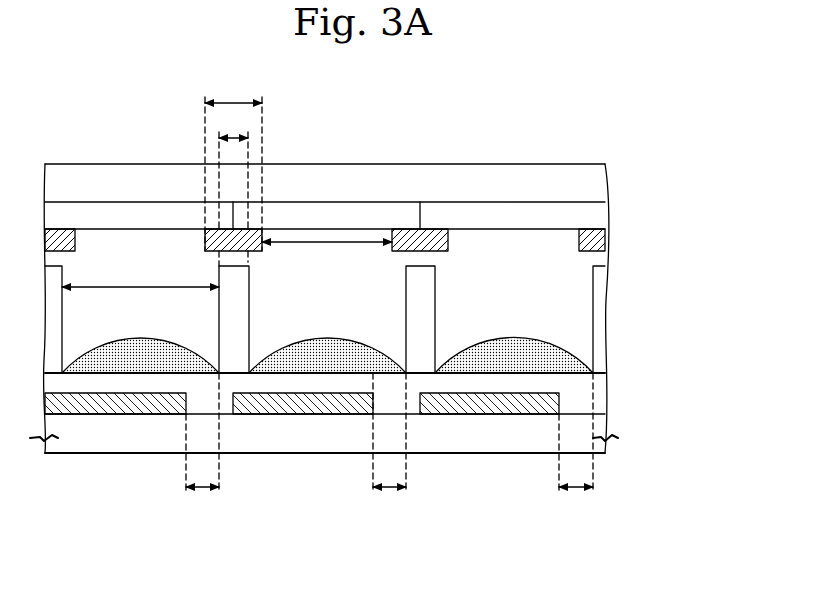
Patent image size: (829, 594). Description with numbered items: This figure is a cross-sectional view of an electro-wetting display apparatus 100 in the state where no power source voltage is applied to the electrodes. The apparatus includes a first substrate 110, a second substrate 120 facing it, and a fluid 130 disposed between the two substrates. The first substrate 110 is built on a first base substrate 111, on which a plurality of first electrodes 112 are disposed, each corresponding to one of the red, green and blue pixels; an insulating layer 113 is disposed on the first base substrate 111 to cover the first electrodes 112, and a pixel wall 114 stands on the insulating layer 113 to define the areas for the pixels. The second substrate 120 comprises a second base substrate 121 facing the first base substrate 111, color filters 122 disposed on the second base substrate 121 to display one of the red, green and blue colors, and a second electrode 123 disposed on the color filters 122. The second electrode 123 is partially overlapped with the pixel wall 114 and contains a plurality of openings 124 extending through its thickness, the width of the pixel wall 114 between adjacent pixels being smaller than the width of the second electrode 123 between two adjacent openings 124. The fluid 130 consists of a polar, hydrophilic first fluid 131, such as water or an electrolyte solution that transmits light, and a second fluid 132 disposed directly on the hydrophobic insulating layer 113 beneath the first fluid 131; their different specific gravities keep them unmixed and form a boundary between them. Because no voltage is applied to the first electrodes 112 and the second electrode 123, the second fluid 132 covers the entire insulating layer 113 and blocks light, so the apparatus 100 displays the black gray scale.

The electro-wetting display apparatus 100 is at (88, 122).
The first substrate 110 is at (682, 350).
The first base substrate 111 is at (600, 430).
The first electrodes 112 is at (556, 406).
The insulating layer 113 is at (600, 384).
The pixel wall 114 is at (600, 358).
The second substrate 120 is at (682, 172).
The second base substrate 121 is at (595, 185).
The color filters 122 is at (600, 218).
The second electrode 123 is at (600, 242).
The openings 124 is at (327, 254).
The fluid 130 is at (682, 276).
The first fluid 131 is at (577, 286).
The second fluid 132 is at (548, 340).